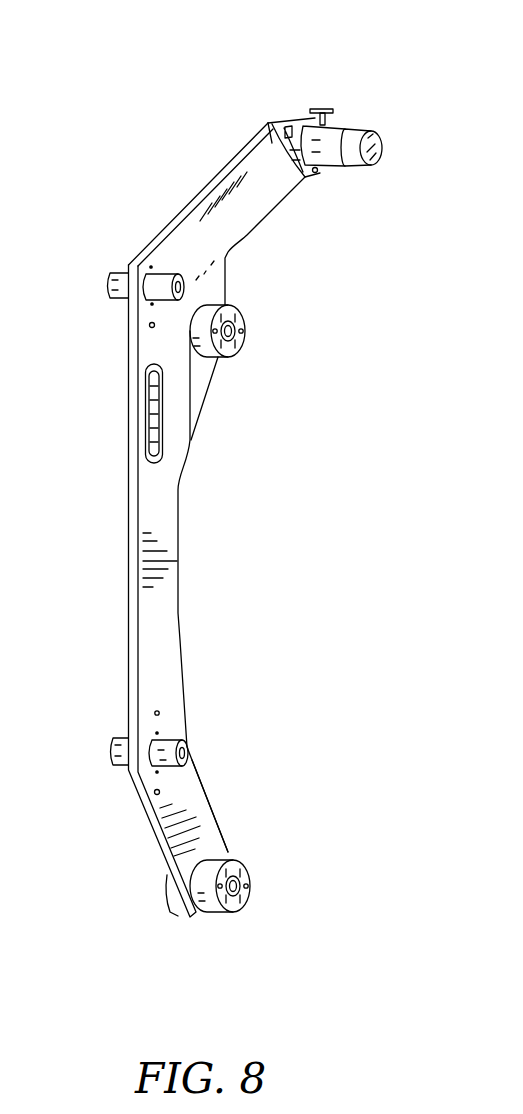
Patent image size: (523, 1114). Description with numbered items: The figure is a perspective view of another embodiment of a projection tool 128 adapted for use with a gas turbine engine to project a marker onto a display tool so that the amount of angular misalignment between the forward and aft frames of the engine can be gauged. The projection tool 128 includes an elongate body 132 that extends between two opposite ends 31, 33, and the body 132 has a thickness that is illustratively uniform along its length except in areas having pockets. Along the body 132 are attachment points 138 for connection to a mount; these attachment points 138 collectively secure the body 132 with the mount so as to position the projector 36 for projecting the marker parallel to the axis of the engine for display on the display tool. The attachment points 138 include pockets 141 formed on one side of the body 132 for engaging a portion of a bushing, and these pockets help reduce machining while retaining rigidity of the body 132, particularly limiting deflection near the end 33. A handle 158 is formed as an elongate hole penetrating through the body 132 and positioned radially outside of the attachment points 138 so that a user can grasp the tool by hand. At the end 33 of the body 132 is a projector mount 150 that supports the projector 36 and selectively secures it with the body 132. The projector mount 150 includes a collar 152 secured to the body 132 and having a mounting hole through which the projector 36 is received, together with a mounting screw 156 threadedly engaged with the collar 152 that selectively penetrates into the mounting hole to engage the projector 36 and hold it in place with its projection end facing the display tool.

The projection tool 128 is at (112, 168).
The body 132 is at (127, 487).
The end 33 is at (268, 112).
The end 31 is at (172, 924).
The handle 158 is at (146, 402).
The attachment points 138 is at (257, 310).
The pockets 141 is at (197, 385).
The collar 152 is at (285, 147).
The projector 36 is at (367, 117).
The mounting screw 156 is at (321, 107).
The projector mount 150 is at (333, 182).